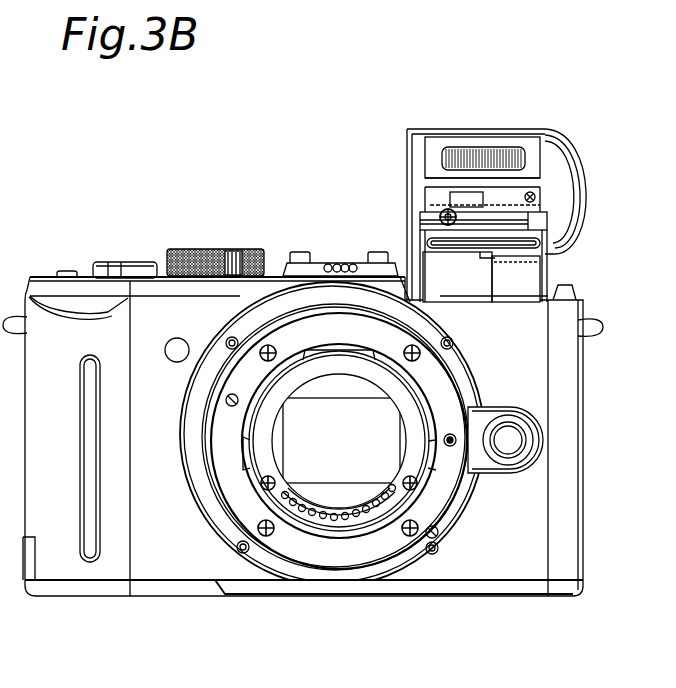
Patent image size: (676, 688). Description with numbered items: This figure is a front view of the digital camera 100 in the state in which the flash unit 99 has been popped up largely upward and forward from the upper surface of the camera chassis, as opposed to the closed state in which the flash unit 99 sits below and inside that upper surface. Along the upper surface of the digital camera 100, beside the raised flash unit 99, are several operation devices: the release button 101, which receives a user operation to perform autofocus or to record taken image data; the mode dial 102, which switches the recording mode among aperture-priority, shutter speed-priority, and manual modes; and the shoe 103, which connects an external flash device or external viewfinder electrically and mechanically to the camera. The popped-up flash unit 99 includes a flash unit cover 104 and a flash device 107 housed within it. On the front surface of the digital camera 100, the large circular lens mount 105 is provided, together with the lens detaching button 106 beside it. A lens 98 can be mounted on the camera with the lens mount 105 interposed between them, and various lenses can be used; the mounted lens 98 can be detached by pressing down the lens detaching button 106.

The digital camera 100 is at (303, 118).
The flash unit 99 is at (602, 113).
The release button 101 is at (134, 262).
The mode dial 102 is at (222, 249).
The shoe 103 is at (362, 262).
The flash unit cover 104 is at (530, 128).
The flash device 107 is at (468, 149).
The lens mount 105 is at (333, 543).
The lens detaching button 106 is at (508, 443).
The lens 98 is at (385, 473).